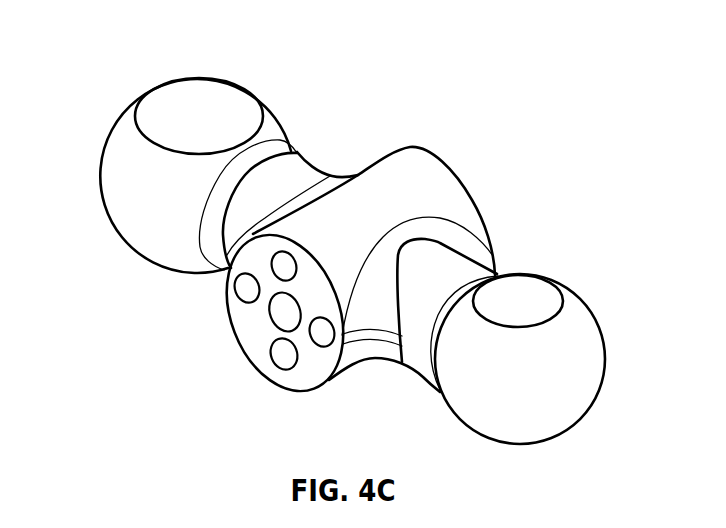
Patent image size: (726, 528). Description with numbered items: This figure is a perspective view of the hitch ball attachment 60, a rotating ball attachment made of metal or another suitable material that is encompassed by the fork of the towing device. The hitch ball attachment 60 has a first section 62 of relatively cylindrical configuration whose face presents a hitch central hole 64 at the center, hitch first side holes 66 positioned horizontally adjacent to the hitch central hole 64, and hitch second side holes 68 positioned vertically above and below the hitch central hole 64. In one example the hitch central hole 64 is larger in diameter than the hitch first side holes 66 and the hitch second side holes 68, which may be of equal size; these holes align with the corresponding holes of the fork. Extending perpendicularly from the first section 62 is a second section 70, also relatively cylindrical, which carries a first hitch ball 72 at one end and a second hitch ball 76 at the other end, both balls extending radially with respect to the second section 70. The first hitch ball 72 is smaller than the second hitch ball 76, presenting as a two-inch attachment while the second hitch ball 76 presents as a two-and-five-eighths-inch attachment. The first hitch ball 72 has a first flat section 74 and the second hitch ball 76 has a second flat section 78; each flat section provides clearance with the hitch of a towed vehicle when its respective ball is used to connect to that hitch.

The hitch ball attachment 60 is at (507, 97).
The first section 62 is at (430, 174).
The hitch central hole 64 is at (284, 312).
The hitch first side holes 66 is at (322, 334).
The hitch second side holes 68 is at (285, 359).
The second section 70 is at (298, 173).
The first hitch ball 72 is at (583, 347).
The first flat section 74 is at (538, 291).
The second hitch ball 76 is at (121, 162).
The second flat section 78 is at (198, 95).